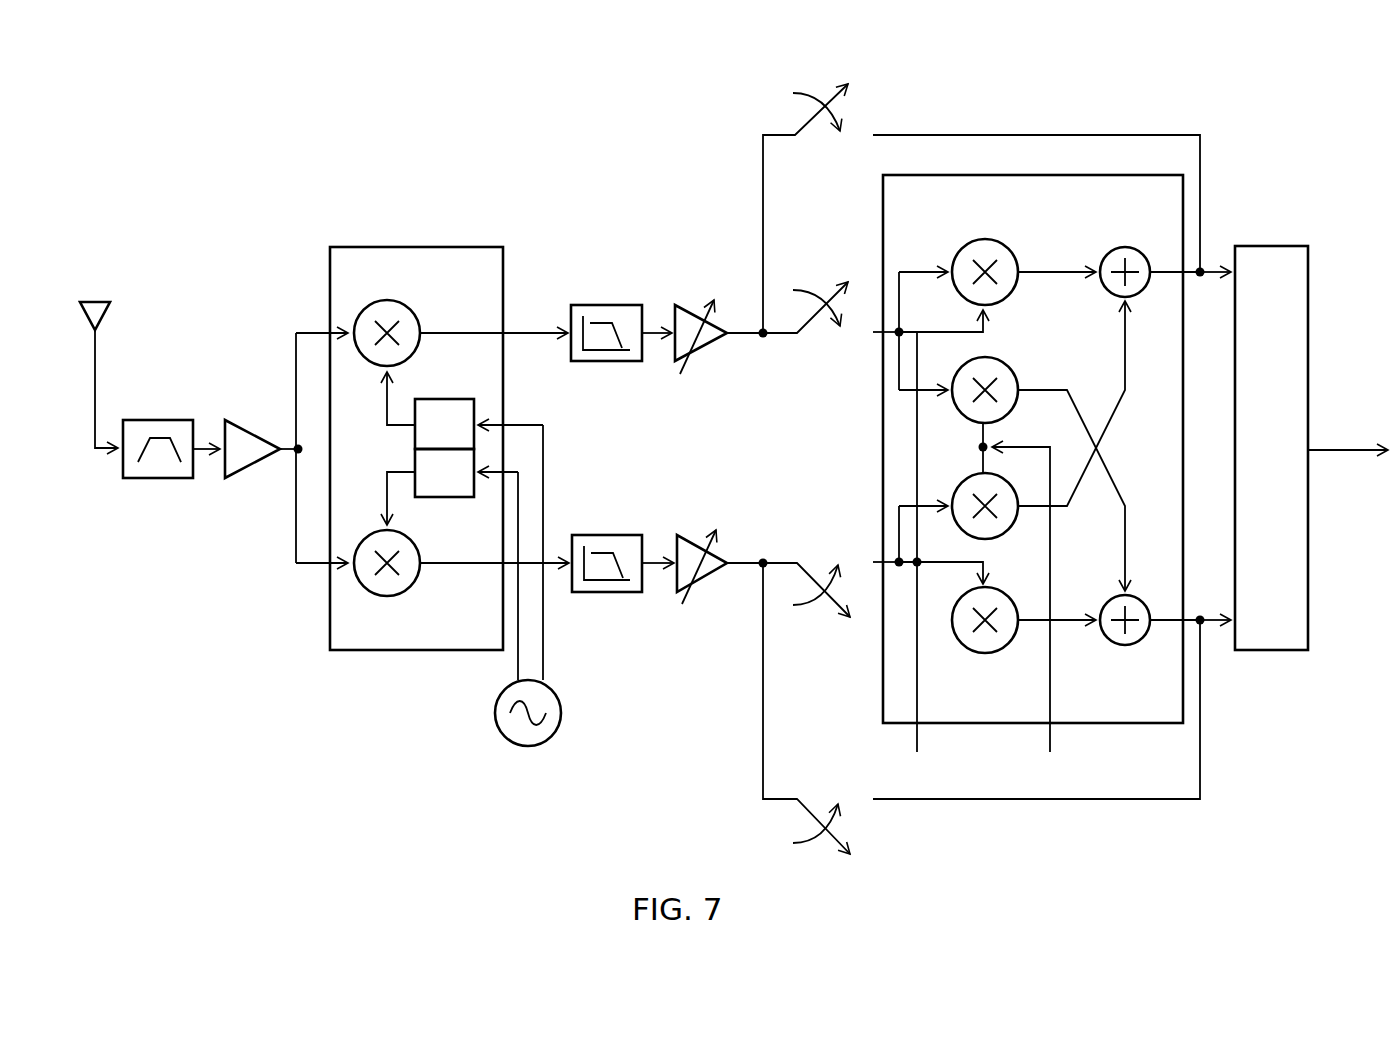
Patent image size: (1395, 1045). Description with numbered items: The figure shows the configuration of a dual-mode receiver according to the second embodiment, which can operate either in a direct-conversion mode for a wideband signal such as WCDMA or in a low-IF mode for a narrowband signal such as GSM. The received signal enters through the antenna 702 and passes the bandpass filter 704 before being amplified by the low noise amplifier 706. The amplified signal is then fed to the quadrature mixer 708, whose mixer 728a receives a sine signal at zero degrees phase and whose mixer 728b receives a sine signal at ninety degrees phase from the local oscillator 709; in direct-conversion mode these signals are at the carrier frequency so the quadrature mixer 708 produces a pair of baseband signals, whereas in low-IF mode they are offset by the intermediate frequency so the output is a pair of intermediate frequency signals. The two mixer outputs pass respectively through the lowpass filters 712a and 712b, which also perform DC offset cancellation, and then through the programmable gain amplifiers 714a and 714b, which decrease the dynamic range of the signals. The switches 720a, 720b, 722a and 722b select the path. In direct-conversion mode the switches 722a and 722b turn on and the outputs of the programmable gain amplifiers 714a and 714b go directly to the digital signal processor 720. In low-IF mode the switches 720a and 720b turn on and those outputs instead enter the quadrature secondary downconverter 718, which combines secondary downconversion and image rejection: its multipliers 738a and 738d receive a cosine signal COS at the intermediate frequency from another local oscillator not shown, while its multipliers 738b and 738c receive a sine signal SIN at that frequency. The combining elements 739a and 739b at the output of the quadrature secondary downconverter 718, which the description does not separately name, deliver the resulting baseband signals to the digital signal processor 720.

The antenna 702 is at (93, 302).
The bandpass filter 704 is at (160, 420).
The low noise amplifier 706 is at (244, 420).
The quadrature mixer 708 is at (398, 247).
The local oscillator 709 is at (528, 747).
The lowpass filter 712a is at (608, 305).
The lowpass filter 712b is at (605, 593).
The programmable gain amplifier 714a is at (700, 305).
The programmable gain amplifier 714b is at (697, 535).
The quadrature secondary downconverter 718 is at (967, 175).
The digital signal processor 720 is at (1253, 246).
The switch 720a is at (829, 293).
The switch 720b is at (829, 600).
The switch 722a is at (981, 192).
The switch 722b is at (981, 721).
The mixer 728a is at (392, 300).
The mixer 728b is at (392, 597).
The multiplier 738a is at (983, 239).
The multiplier 738b is at (1008, 362).
The multiplier 738c is at (1003, 533).
The multiplier 738d is at (985, 654).
The summer 739a is at (1125, 247).
The summer 739b is at (1125, 646).